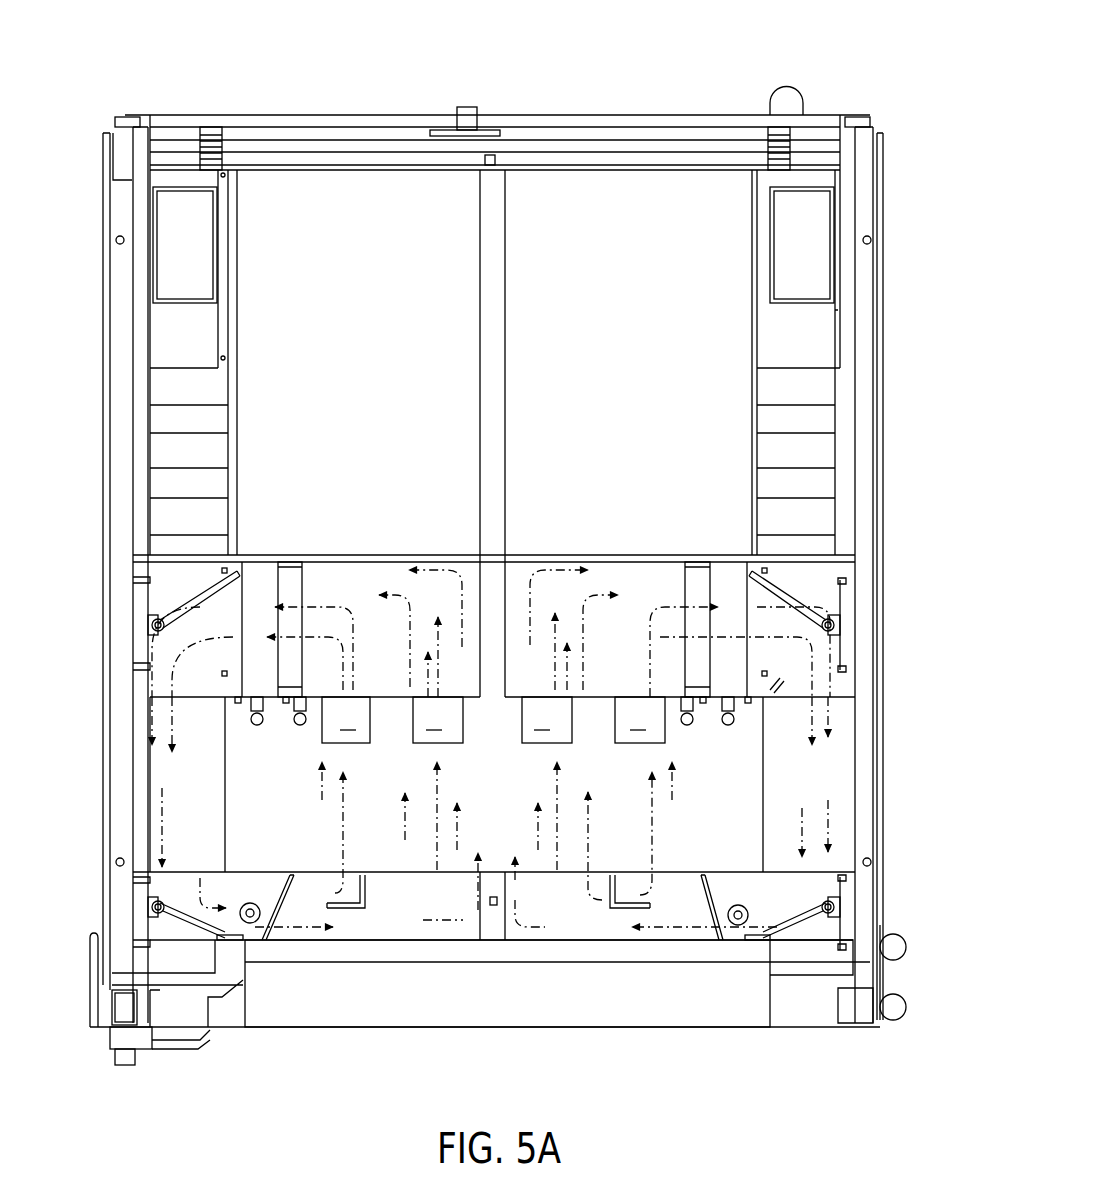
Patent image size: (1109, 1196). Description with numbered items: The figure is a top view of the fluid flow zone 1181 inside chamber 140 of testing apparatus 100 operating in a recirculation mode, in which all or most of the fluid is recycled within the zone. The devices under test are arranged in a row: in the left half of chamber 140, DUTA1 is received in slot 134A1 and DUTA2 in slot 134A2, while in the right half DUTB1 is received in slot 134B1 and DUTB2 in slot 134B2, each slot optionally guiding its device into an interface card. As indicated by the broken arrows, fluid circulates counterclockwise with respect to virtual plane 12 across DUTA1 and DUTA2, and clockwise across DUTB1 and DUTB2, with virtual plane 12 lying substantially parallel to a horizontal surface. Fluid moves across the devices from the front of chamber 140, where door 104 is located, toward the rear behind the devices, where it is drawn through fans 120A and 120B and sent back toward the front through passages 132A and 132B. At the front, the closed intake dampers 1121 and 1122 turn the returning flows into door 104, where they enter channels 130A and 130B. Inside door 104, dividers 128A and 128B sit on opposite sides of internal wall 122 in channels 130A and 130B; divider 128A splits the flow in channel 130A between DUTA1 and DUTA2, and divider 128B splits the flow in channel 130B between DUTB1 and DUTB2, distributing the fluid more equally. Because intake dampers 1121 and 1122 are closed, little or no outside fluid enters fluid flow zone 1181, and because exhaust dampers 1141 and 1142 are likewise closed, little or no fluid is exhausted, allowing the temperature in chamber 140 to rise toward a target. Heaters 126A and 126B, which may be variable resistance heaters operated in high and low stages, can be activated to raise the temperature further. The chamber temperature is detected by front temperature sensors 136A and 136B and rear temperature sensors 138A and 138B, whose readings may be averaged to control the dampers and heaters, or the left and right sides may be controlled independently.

The testing apparatus 100 is at (498, 535).
The virtual plane 12 is at (548, 737).
The door 104 is at (511, 943).
The intake damper 1121 is at (195, 875).
The intake damper 1122 is at (837, 853).
The exhaust damper 1141 is at (148, 601).
The exhaust damper 1142 is at (839, 663).
The fluid flow zone 1181 is at (101, 784).
The fan 120A is at (315, 578).
The fan 120B is at (680, 572).
The internal wall 122 is at (494, 829).
The heater 126A is at (260, 868).
The heater 126B is at (739, 865).
The divider 128A is at (328, 863).
The divider 128B is at (663, 867).
The channel 130A is at (352, 896).
The channel 130B is at (646, 892).
The passage 132A is at (192, 737).
The passage 132B is at (800, 777).
The slot 134A1 is at (370, 740).
The slot 134A2 is at (464, 740).
The slot 134B1 is at (575, 740).
The slot 134B2 is at (672, 740).
The front temperature sensor 136A is at (331, 857).
The front temperature sensor 136B is at (660, 859).
The rear temperature sensor 138A is at (275, 600).
The rear temperature sensor 138B is at (709, 603).
The chamber 140 is at (494, 798).
The device under test DUTA1 is at (329, 623).
The device under test DUTA2 is at (424, 612).
The device under test DUTB1 is at (574, 600).
The device under test DUTB2 is at (711, 620).